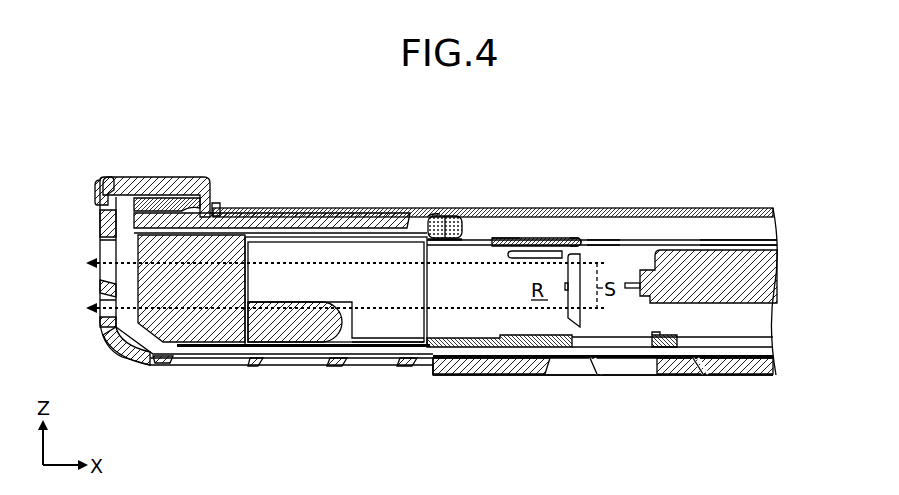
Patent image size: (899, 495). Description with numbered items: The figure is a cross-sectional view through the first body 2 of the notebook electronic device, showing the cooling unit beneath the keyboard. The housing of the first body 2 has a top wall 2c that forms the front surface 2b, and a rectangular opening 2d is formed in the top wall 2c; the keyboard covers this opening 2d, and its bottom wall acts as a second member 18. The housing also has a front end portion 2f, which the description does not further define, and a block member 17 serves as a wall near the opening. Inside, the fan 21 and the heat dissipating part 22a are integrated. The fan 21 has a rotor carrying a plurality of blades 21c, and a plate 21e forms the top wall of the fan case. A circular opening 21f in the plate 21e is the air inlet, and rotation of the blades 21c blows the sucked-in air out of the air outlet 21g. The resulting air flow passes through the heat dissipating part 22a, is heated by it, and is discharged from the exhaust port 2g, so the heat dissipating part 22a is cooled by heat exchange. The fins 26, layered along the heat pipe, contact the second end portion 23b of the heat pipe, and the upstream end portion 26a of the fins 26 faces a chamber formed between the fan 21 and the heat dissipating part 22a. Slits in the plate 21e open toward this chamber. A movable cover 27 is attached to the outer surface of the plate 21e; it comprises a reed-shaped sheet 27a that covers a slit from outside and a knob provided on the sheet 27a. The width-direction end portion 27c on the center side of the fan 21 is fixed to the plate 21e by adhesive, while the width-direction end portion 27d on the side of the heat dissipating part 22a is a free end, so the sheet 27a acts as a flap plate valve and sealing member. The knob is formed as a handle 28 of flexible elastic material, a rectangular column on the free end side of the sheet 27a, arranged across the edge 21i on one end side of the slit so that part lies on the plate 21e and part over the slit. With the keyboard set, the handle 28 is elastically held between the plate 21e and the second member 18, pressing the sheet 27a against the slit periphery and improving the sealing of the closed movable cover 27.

The first body 2 is at (126, 355).
The front surface 2b is at (161, 177).
The top wall 2c is at (134, 177).
The opening 2d is at (215, 191).
The front end portion (2a) 2f is at (98, 230).
The exhaust port 2g is at (99, 242).
The block member 17 is at (335, 221).
The second member 18 is at (655, 208).
The fan 21 is at (736, 231).
The blades 21c is at (753, 283).
The plate 21e is at (777, 218).
The opening 21f is at (592, 239).
The air outlet 21g is at (566, 289).
The edge 21i is at (450, 243).
The heat dissipating part 22a is at (318, 360).
The second end portion 23b is at (290, 333).
The fins 26 is at (380, 330).
The end portion 26a is at (433, 341).
The movable cover 27 is at (531, 233).
The sheet 27a is at (507, 238).
The width-direction end portion 27c is at (566, 237).
The width-direction end portion 27d is at (428, 216).
The handle 28 is at (444, 207).